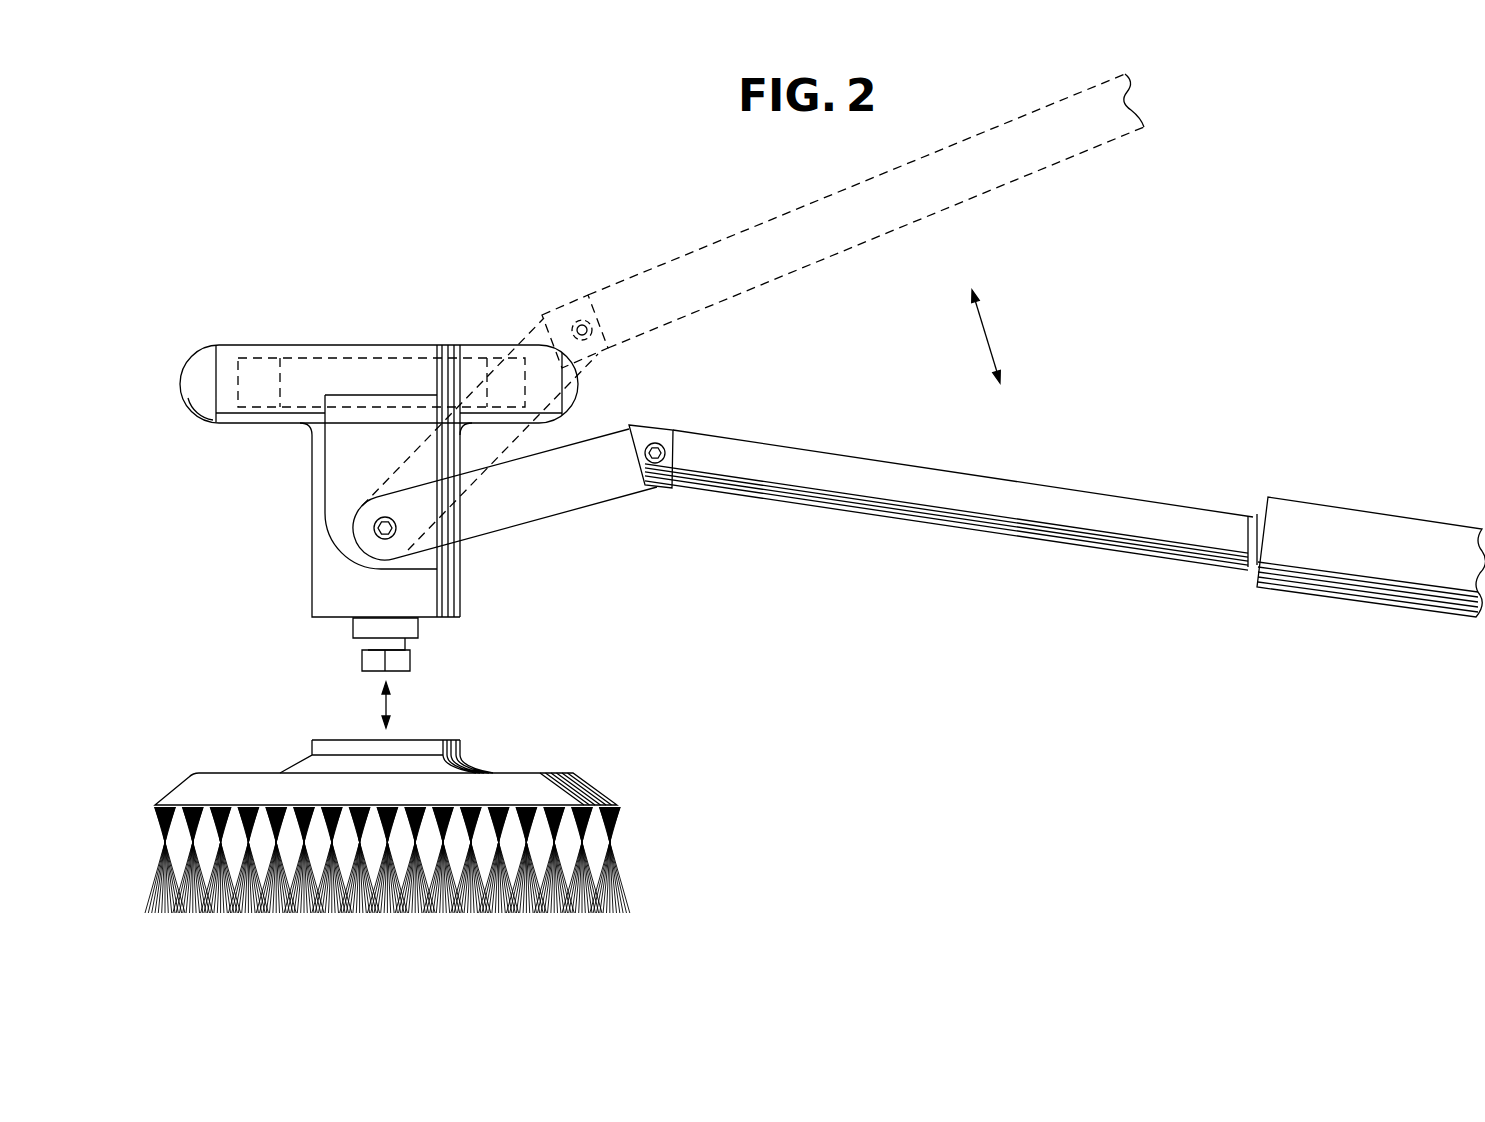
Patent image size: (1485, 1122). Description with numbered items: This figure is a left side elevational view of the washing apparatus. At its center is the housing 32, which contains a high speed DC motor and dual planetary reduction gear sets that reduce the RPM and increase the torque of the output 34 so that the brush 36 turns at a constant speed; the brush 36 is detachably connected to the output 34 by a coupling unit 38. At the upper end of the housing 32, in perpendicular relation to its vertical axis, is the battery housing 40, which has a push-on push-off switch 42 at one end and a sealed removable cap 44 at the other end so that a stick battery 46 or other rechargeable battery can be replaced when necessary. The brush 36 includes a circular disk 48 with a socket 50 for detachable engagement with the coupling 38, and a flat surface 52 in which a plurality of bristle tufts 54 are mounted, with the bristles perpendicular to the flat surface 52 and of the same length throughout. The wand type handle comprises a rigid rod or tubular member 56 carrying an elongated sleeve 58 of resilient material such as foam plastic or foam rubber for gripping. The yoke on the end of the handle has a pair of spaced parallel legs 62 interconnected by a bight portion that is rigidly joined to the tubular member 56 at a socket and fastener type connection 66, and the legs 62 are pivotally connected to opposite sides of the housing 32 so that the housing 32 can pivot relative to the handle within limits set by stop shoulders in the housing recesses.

The housing 32 is at (312, 517).
The output 34 is at (363, 625).
The brush 36 is at (437, 800).
The coupling unit 38 is at (402, 660).
The battery housing 40 is at (363, 352).
The push-on push-off switch 42 is at (197, 372).
The sealed removable cap 44 is at (570, 388).
The stick battery 46 is at (297, 372).
The circular disk 48 is at (243, 782).
The socket 50 is at (413, 740).
The flat surface 52 is at (615, 827).
The bristle tufts 54 is at (610, 863).
The rigid rod or tubular member 56 is at (885, 476).
The elongated sleeve 58 is at (1322, 518).
The legs 62 is at (593, 483).
The socket and fastener type connection 66 is at (654, 429).